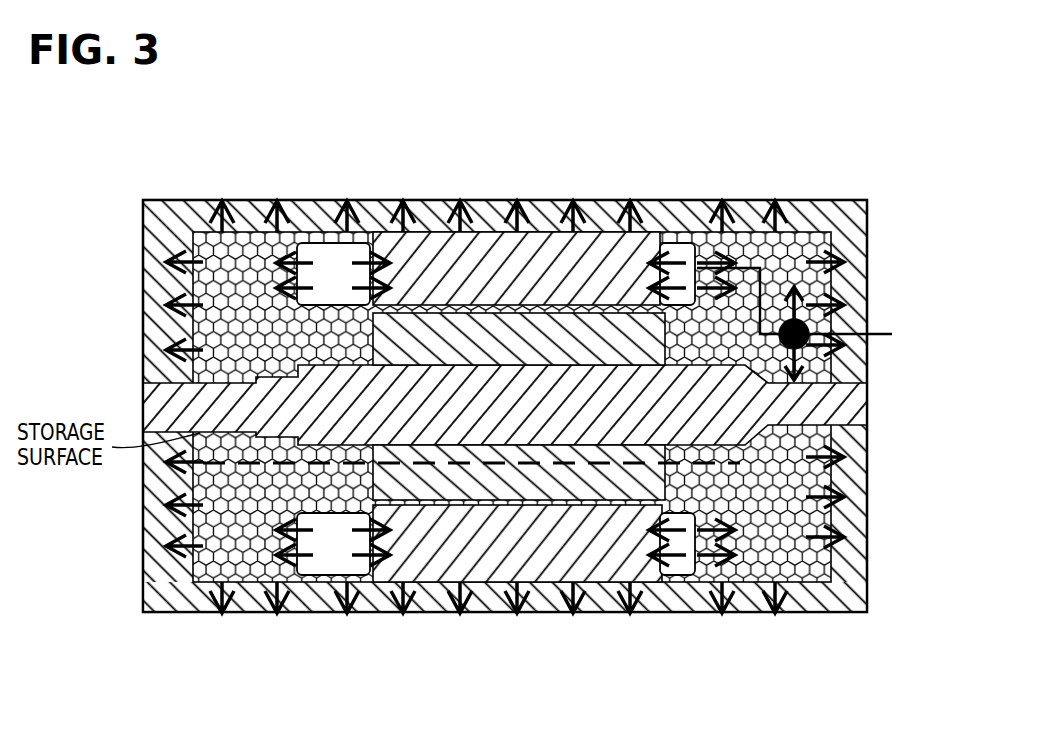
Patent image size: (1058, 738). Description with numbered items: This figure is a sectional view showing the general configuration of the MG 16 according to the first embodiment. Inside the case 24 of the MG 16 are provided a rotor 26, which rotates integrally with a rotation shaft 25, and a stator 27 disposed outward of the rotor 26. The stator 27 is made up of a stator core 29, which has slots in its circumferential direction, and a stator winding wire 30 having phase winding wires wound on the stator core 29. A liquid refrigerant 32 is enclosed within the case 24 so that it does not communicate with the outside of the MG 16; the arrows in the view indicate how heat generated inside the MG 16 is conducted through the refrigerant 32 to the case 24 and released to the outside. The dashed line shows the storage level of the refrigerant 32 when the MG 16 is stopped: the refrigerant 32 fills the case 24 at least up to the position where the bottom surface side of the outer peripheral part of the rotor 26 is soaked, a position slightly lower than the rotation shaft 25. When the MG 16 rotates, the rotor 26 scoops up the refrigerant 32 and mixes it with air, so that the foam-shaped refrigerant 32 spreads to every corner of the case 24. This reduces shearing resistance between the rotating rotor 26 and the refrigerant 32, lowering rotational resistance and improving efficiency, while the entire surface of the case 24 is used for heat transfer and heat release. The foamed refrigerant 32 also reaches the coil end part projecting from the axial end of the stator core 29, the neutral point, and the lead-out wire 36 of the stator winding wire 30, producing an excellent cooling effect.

The MG 16 is at (832, 181).
The case 24 is at (654, 199).
The rotation shaft 25 is at (718, 447).
The rotor 26 is at (668, 455).
The stator 27 is at (538, 585).
The stator core 29 is at (478, 566).
The stator winding wire 30 is at (308, 575).
The liquid refrigerant 32 is at (187, 522).
The lead-out wire 36 is at (833, 288).